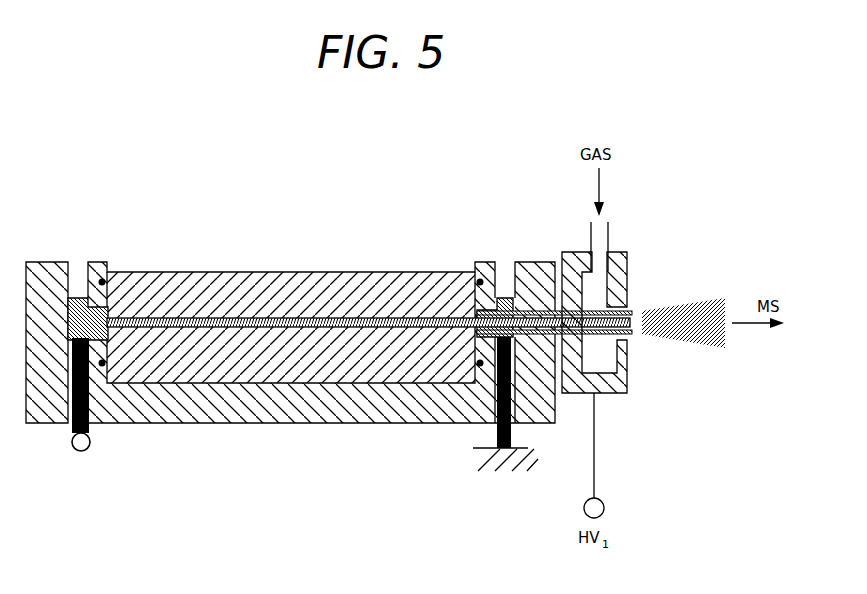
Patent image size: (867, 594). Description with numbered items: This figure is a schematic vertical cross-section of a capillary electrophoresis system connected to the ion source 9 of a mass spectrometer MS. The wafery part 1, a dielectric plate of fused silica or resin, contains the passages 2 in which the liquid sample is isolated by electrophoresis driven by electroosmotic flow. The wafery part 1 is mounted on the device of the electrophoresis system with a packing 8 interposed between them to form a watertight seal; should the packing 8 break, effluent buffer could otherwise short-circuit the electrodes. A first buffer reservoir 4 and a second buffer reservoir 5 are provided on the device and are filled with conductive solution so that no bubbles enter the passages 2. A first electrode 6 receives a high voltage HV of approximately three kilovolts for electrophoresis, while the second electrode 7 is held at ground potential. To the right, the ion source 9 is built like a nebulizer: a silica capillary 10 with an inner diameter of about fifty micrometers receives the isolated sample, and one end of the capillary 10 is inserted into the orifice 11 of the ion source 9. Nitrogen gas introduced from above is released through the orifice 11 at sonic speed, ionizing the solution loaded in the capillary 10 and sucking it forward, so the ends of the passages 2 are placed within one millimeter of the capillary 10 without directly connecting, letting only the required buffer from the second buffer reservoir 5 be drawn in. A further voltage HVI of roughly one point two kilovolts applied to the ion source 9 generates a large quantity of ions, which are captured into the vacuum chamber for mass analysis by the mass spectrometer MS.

The wafery part 1 is at (229, 272).
The passages 2 is at (334, 318).
The first buffer reservoir 4 is at (77, 298).
The second buffer reservoir 5 is at (505, 298).
The first electrode 6 is at (90, 430).
The second electrode 7 is at (496, 432).
The packing 8 is at (474, 270).
The ion source 9 is at (616, 395).
The silica capillary 10 is at (599, 312).
The orifice 11 is at (630, 334).